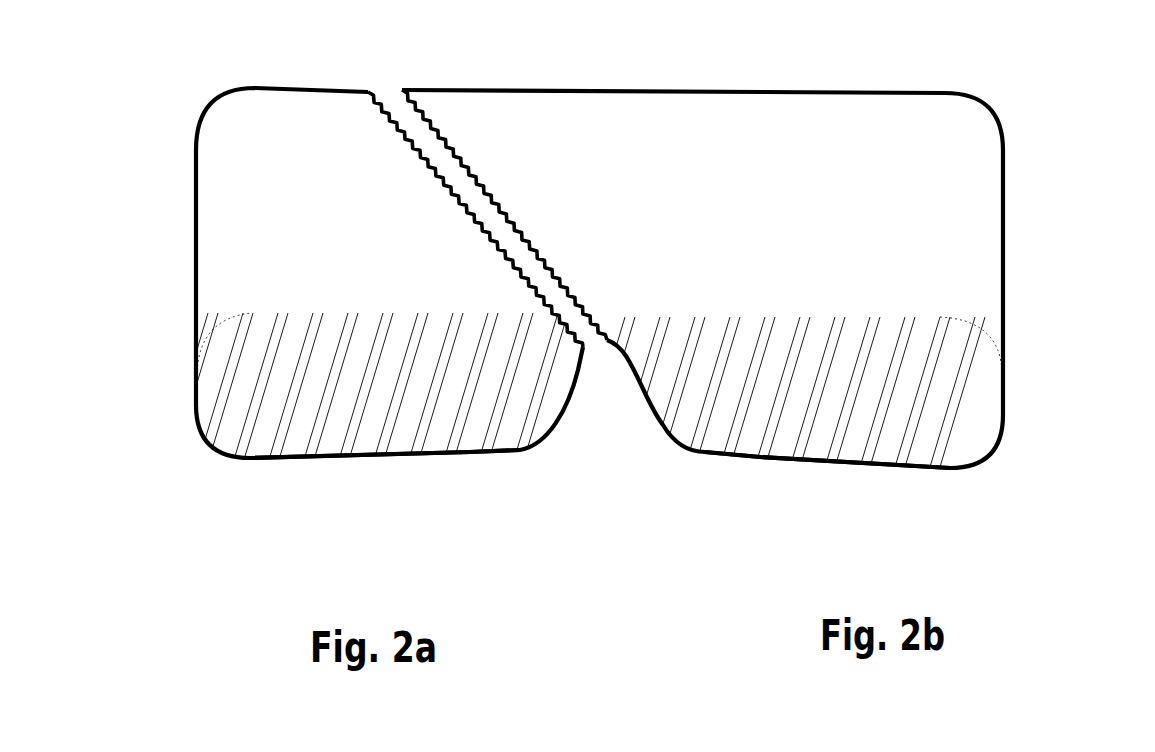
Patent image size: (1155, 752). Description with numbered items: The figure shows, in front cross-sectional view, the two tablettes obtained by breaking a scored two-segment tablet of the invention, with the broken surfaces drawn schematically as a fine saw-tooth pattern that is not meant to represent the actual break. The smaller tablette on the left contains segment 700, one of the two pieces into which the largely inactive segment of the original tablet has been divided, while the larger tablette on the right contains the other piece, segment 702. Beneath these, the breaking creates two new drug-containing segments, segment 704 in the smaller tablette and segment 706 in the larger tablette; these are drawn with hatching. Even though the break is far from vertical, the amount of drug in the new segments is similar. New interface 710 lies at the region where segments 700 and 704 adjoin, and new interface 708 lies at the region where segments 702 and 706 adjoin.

In FIG. 2A, the segment 700 is at (190, 192).
In FIG. 2B, the segment 702 is at (1006, 197).
In FIG. 2A, the new segment 704 is at (374, 468).
In FIG. 2B, the new segment 706 is at (790, 462).
In FIG. 2B, the interface 708 is at (932, 314).
In FIG. 2A, the interface 710 is at (297, 306).